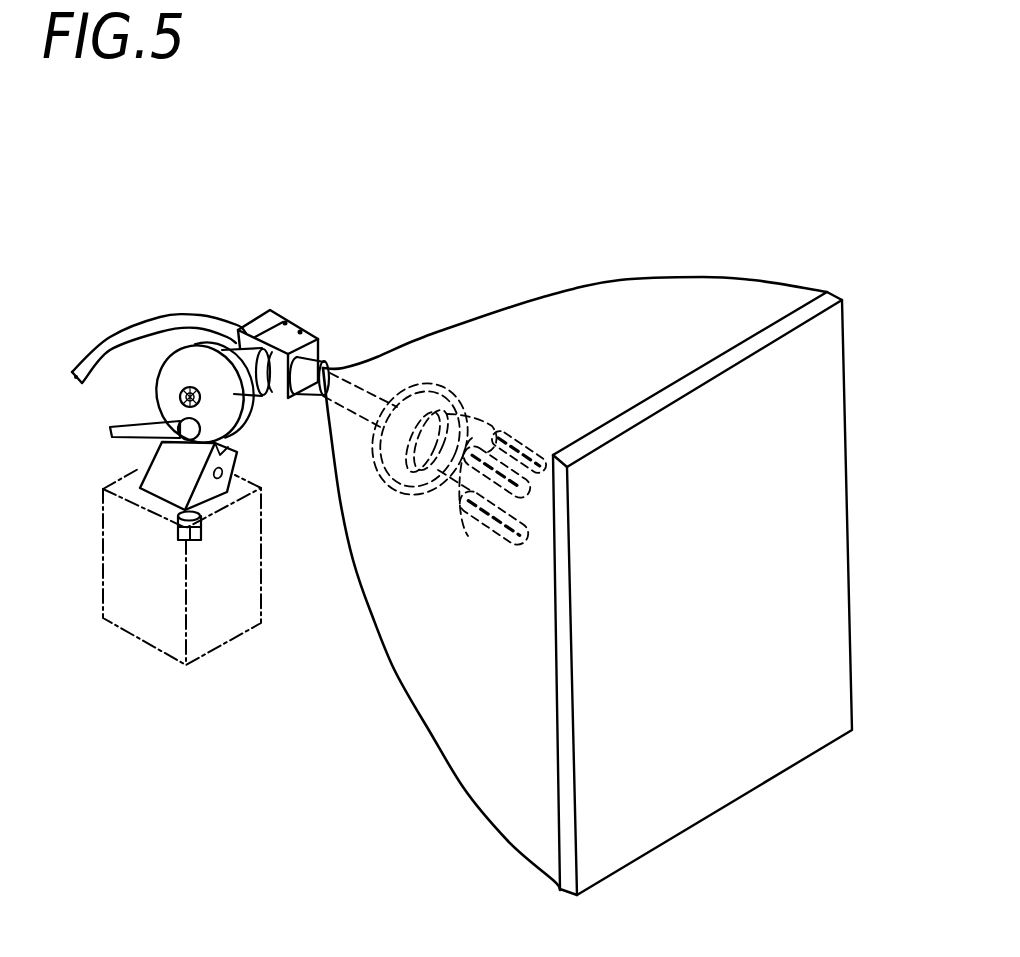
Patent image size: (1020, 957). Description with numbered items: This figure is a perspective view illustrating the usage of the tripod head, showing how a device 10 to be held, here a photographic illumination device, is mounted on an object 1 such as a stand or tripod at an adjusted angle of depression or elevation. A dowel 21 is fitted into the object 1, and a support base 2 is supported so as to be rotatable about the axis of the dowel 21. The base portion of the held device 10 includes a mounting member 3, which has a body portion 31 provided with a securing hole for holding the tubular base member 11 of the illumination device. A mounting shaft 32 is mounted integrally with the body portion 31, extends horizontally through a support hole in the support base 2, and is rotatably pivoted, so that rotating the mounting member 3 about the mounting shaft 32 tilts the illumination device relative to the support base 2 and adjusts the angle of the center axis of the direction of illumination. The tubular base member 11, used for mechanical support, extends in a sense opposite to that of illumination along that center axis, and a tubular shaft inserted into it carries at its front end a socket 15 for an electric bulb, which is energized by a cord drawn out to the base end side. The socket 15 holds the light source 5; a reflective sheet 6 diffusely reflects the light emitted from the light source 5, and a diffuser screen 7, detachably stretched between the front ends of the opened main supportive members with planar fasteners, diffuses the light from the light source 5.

The object 1 is at (135, 572).
The support base 2 is at (146, 453).
The dowel 21 is at (195, 545).
The mounting member 3 is at (256, 308).
The body portion 31 is at (277, 318).
The mounting shaft 32 is at (247, 378).
The tubular base member 11 is at (328, 364).
The device to be held 10 is at (672, 240).
The reflective sheet 6 is at (772, 296).
The diffuser screen 7 is at (832, 507).
The light source 5 is at (527, 452).
The socket 15 is at (450, 527).